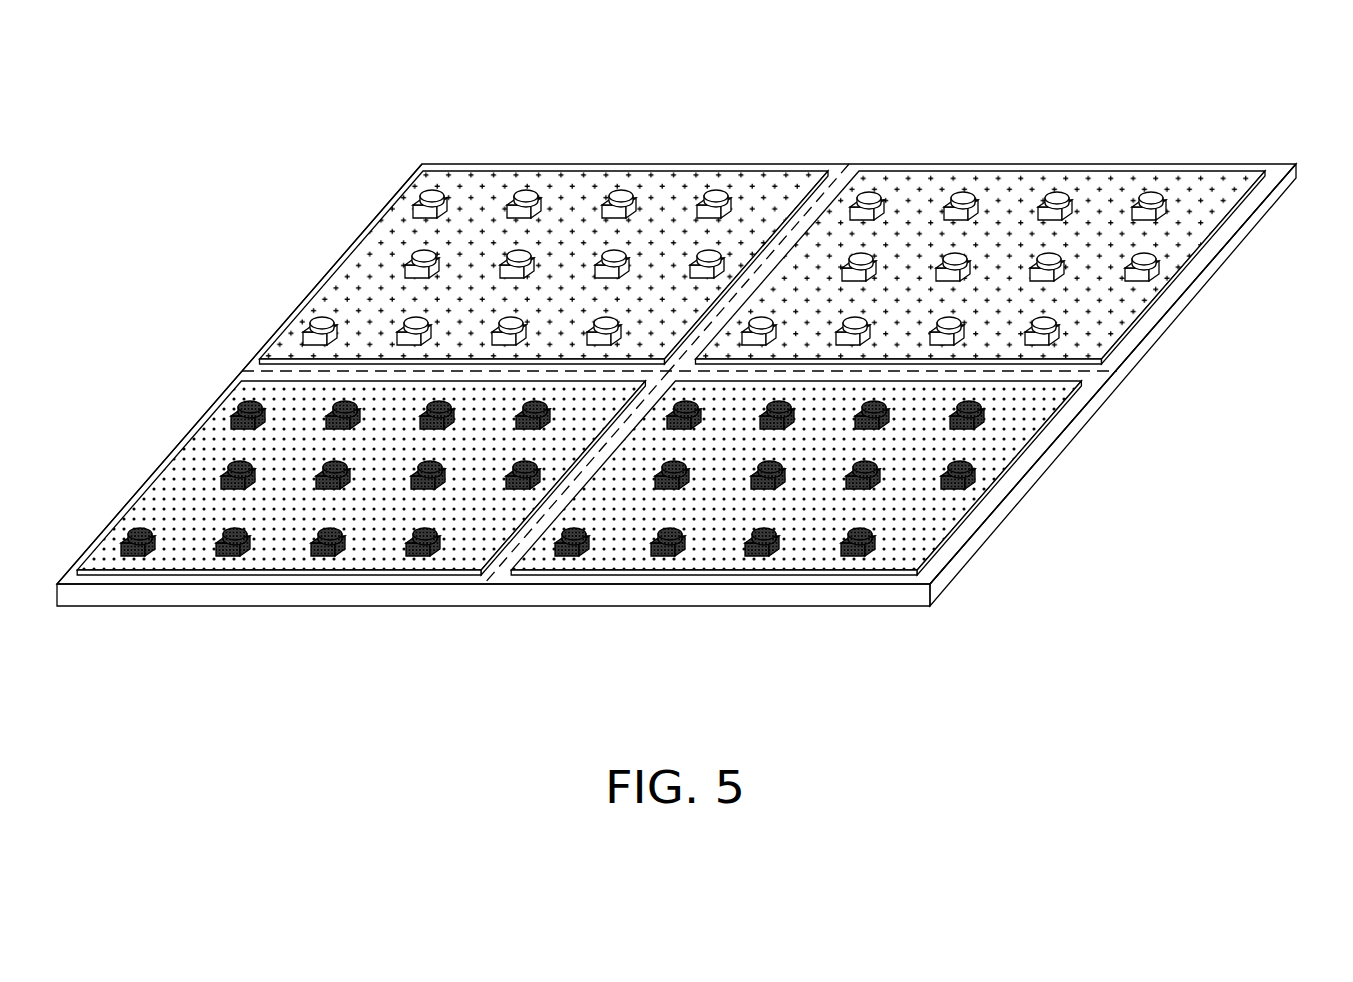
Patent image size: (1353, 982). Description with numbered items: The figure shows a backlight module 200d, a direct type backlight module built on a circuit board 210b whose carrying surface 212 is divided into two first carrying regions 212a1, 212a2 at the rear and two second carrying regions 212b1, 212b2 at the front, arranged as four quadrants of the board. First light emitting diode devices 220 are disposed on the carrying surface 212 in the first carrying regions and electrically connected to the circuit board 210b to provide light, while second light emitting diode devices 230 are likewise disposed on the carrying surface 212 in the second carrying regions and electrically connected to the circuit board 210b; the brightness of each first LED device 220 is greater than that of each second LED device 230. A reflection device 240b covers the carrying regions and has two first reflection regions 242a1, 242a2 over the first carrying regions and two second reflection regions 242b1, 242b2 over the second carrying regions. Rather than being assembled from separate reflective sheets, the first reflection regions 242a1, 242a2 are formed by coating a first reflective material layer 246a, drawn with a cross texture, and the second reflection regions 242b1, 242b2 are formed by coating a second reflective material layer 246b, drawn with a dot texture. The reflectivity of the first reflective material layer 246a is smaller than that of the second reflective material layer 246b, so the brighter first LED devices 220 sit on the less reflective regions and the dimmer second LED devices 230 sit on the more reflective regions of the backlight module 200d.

The backlight module 200d is at (702, 390).
The circuit board 210b is at (987, 530).
The carrying surface 212 is at (702, 379).
The first carrying region 212a1 is at (837, 170).
The first carrying region 212a2 is at (1272, 172).
The second carrying region 212b1 is at (73, 578).
The second carrying region 212b2 is at (502, 580).
The first light emitting diode device 220 is at (523, 192).
The second light emitting diode device 230 is at (327, 560).
The reflection device 240b is at (671, 370).
The first reflection region 242a1 is at (379, 247).
The first reflection region 242a2 is at (1220, 204).
The second reflection region 242b1 is at (183, 557).
The second reflection region 242b2 is at (622, 558).
The first reflective material layer 246a is at (1076, 325).
The second reflective material layer 246b is at (602, 475).